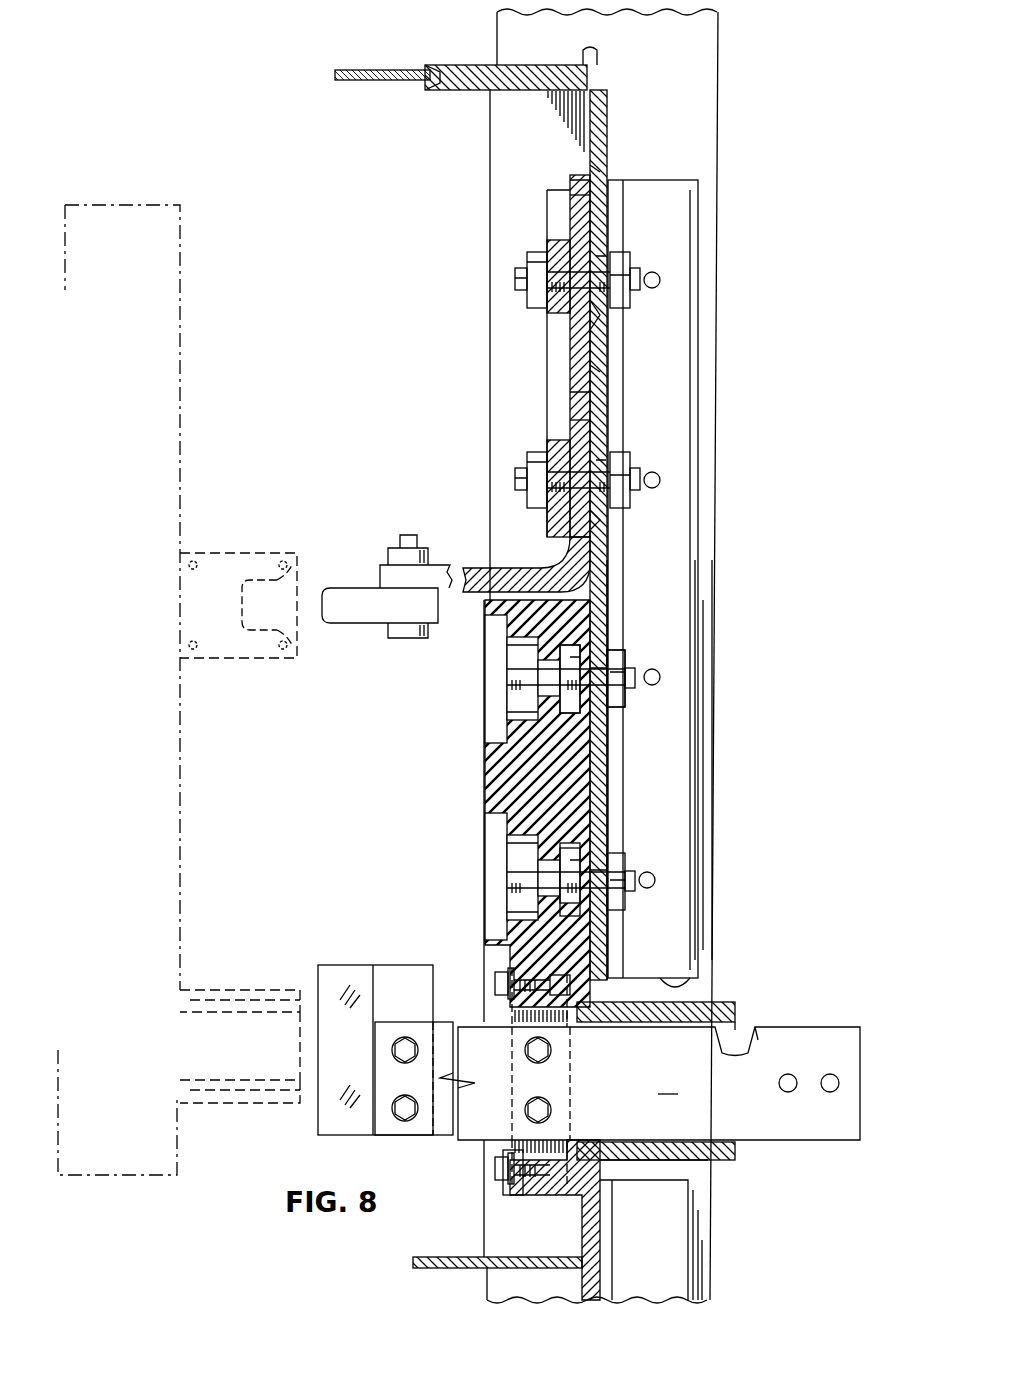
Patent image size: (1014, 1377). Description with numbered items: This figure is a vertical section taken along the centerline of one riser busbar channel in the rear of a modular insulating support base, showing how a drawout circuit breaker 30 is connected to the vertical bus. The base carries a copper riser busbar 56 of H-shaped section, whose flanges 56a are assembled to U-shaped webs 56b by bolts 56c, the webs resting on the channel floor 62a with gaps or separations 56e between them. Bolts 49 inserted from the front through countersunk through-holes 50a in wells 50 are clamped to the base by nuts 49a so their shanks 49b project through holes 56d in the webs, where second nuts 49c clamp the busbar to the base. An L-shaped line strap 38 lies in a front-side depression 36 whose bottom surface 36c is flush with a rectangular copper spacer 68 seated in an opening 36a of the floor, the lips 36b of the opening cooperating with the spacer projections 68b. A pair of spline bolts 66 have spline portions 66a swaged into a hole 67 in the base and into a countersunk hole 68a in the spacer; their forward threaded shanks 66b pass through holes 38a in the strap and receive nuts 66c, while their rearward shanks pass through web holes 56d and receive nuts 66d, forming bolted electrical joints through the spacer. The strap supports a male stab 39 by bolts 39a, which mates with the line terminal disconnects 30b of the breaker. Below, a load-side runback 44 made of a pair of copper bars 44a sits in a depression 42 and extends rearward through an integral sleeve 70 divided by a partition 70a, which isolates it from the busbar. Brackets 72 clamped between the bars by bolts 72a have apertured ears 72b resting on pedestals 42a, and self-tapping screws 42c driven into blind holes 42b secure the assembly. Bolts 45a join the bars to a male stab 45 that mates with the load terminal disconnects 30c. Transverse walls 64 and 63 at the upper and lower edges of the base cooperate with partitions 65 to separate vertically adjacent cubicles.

The circuit breaker 30 is at (183, 240).
The line terminal disconnects 30b is at (236, 665).
The load terminal disconnects 30c is at (222, 1106).
The line strap depression 36 is at (565, 585).
The opening 36a is at (575, 205).
The lips 36b is at (572, 178).
The bottom surface 36c is at (578, 420).
The line strap 38 is at (552, 352).
The holes 38a is at (556, 298).
The male stab 39 is at (348, 624).
The bolts 39a is at (405, 639).
The depression 42 is at (592, 1225).
The pedestals 42a is at (520, 1195).
The blind holes 42b is at (565, 985).
The self-tapping screws 42c is at (500, 980).
The runback 44 is at (650, 1083).
The copper bars 44a is at (776, 1030).
The male stab 45 is at (353, 968).
The bolts 45a is at (404, 1118).
The bolts 49 is at (522, 672).
The nuts 49a is at (580, 657).
The bolt shanks 49b is at (600, 668).
The second nuts 49c is at (620, 672).
The wells 50 is at (500, 740).
The through-holes 50a is at (530, 692).
The riser busbar 56 is at (702, 784).
The flanges 56a is at (680, 700).
The webs 56b is at (600, 820).
The bolts 56c is at (660, 677).
The holes 56d is at (632, 702).
The separations 56e is at (680, 985).
The channel floor 62a is at (606, 440).
The transverse wall 63 is at (478, 66).
The transverse wall 64 is at (480, 95).
The partitions 65 is at (373, 71).
The spline bolts 66 is at (618, 282).
The spline portion 66a is at (598, 258).
The threaded shanks 66b is at (515, 278).
The nuts 66c is at (522, 262).
The nuts 66d is at (622, 275).
The hole 67 is at (592, 520).
The spacer 68 is at (578, 222).
The countersunk hole 68a is at (600, 315).
The spacer projections 68b is at (600, 172).
The sleeve 70 is at (736, 1160).
The partition 70a is at (732, 1010).
The brackets 72 is at (548, 1108).
The bolts 72a is at (546, 1050).
The ears 72b is at (506, 1185).